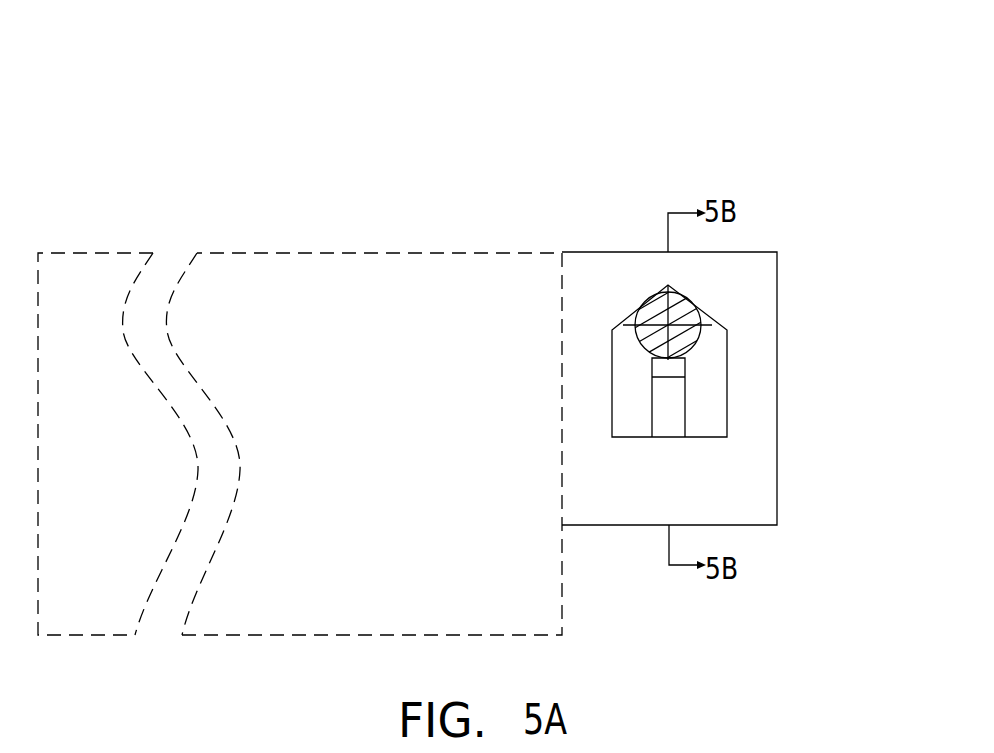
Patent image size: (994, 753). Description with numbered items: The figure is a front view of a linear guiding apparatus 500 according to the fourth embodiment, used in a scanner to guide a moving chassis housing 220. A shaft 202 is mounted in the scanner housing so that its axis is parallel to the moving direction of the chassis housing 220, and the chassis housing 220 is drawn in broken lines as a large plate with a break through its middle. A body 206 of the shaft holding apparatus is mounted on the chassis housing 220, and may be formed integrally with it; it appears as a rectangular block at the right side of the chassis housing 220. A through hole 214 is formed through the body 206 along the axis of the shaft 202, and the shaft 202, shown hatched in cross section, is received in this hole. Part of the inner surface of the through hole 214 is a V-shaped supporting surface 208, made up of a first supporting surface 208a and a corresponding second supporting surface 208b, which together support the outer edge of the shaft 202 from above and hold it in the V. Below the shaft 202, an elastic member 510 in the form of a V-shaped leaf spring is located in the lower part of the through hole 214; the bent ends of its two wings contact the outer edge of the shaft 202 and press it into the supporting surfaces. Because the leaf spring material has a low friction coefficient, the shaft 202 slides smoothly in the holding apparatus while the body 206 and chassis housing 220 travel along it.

The linear guiding apparatus 500 is at (838, 34).
The chassis housing 220 is at (273, 253).
The body 206 is at (777, 462).
The through hole 214 is at (707, 364).
The elastic member 510 is at (685, 412).
The shaft 202 is at (638, 341).
The V-shaped supporting surface 208 is at (702, 133).
The first supporting surface 208a is at (644, 302).
The second supporting surface 208b is at (697, 310).